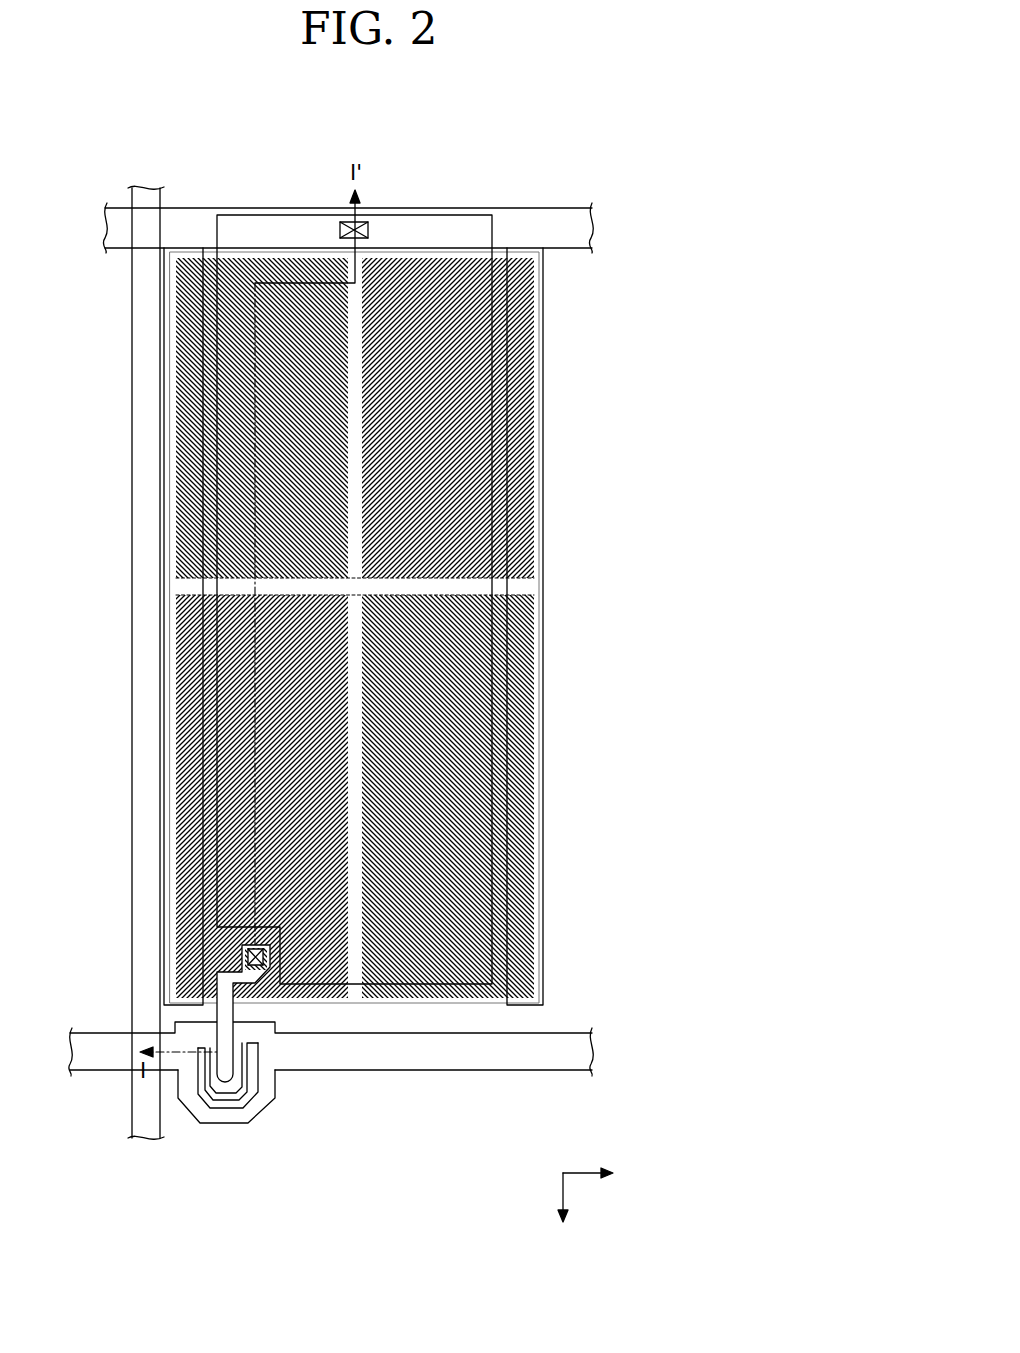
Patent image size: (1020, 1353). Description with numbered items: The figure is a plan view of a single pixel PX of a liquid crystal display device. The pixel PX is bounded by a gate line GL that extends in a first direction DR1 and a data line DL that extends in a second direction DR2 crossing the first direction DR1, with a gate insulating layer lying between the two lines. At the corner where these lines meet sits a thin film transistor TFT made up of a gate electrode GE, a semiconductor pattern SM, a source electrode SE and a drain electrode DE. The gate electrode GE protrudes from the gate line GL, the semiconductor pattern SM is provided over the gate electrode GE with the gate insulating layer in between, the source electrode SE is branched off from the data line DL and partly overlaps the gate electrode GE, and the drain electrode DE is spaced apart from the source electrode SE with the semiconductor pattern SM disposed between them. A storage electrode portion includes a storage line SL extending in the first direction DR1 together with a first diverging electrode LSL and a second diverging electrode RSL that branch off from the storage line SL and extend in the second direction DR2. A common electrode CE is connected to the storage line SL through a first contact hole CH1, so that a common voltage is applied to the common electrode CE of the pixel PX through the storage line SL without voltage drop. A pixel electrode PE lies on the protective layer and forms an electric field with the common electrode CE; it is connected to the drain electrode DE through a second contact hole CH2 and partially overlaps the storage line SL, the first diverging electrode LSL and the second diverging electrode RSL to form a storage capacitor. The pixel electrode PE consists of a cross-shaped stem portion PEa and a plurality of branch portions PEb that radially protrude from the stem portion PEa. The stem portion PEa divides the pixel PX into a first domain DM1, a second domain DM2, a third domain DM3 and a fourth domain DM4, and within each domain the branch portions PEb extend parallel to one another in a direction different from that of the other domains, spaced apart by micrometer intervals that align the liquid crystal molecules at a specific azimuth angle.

The pixel PX is at (522, 132).
The first diverging electrode LSL is at (164, 280).
The storage line SL is at (572, 248).
The data line DL is at (148, 657).
The gate line GL is at (452, 1070).
The common electrode CE is at (355, 987).
The pixel electrode PE is at (385, 628).
The stem portion PEa is at (358, 628).
The branch portions PEb is at (503, 628).
The first domain DM1 is at (243, 505).
The second domain DM2 is at (467, 505).
The third domain DM3 is at (243, 740).
The fourth domain DM4 is at (467, 733).
The second diverging electrode RSL is at (530, 578).
The first contact hole CH1 is at (340, 230).
The second contact hole CH2 is at (248, 957).
The thin film transistor TFT is at (251, 1093).
The gate electrode GE is at (268, 1120).
The source electrode SE is at (228, 1115).
The drain electrode DE is at (222, 1070).
The semiconductor pattern SM is at (283, 1110).
The first direction DR1 is at (611, 1174).
The second direction DR2 is at (567, 1211).